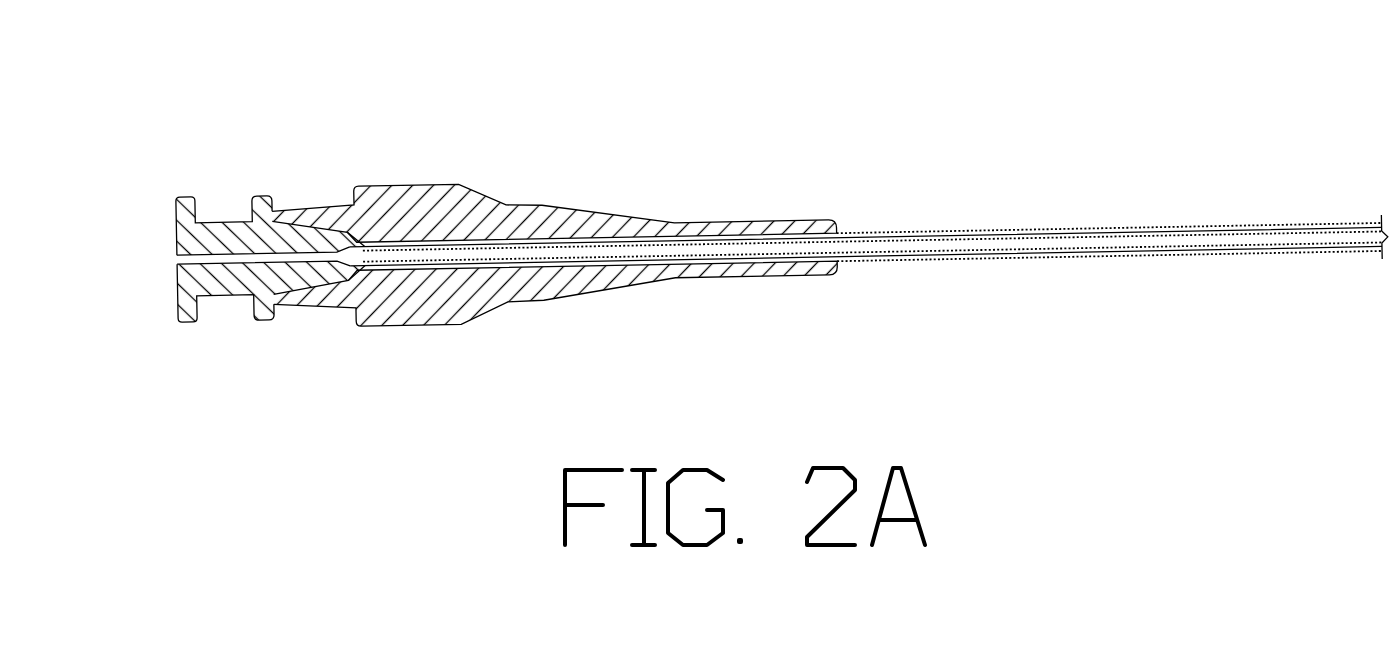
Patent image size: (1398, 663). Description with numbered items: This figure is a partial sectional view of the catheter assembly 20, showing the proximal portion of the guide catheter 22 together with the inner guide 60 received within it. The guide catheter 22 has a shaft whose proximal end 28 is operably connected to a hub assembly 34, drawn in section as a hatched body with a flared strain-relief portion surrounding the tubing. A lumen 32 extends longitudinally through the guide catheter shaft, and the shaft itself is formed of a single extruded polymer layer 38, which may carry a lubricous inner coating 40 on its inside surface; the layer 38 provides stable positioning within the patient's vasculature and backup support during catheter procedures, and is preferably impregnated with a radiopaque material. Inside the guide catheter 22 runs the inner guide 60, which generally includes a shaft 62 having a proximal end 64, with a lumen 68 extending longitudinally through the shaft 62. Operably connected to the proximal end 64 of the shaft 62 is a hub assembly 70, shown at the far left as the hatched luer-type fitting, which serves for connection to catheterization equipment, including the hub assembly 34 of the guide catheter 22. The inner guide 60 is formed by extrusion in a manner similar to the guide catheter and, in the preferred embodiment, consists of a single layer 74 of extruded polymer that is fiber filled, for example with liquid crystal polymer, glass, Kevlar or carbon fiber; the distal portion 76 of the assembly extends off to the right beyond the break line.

The catheter assembly 20 is at (148, 93).
The guide catheter 22 is at (857, 182).
The proximal end 28 is at (870, 260).
The lumen 32 is at (990, 230).
The hub assembly 34 is at (447, 185).
The single extruded polymer layer 38 is at (1120, 225).
The lubricous inner coating 40 is at (1148, 235).
The inner guide 60 is at (527, 244).
The shaft 62 is at (1043, 257).
The proximal end 64 is at (933, 257).
The lumen 68 is at (1212, 240).
The hub assembly 70 is at (223, 296).
The single layer 74 is at (857, 232).
The distal portion 76 is at (1255, 240).